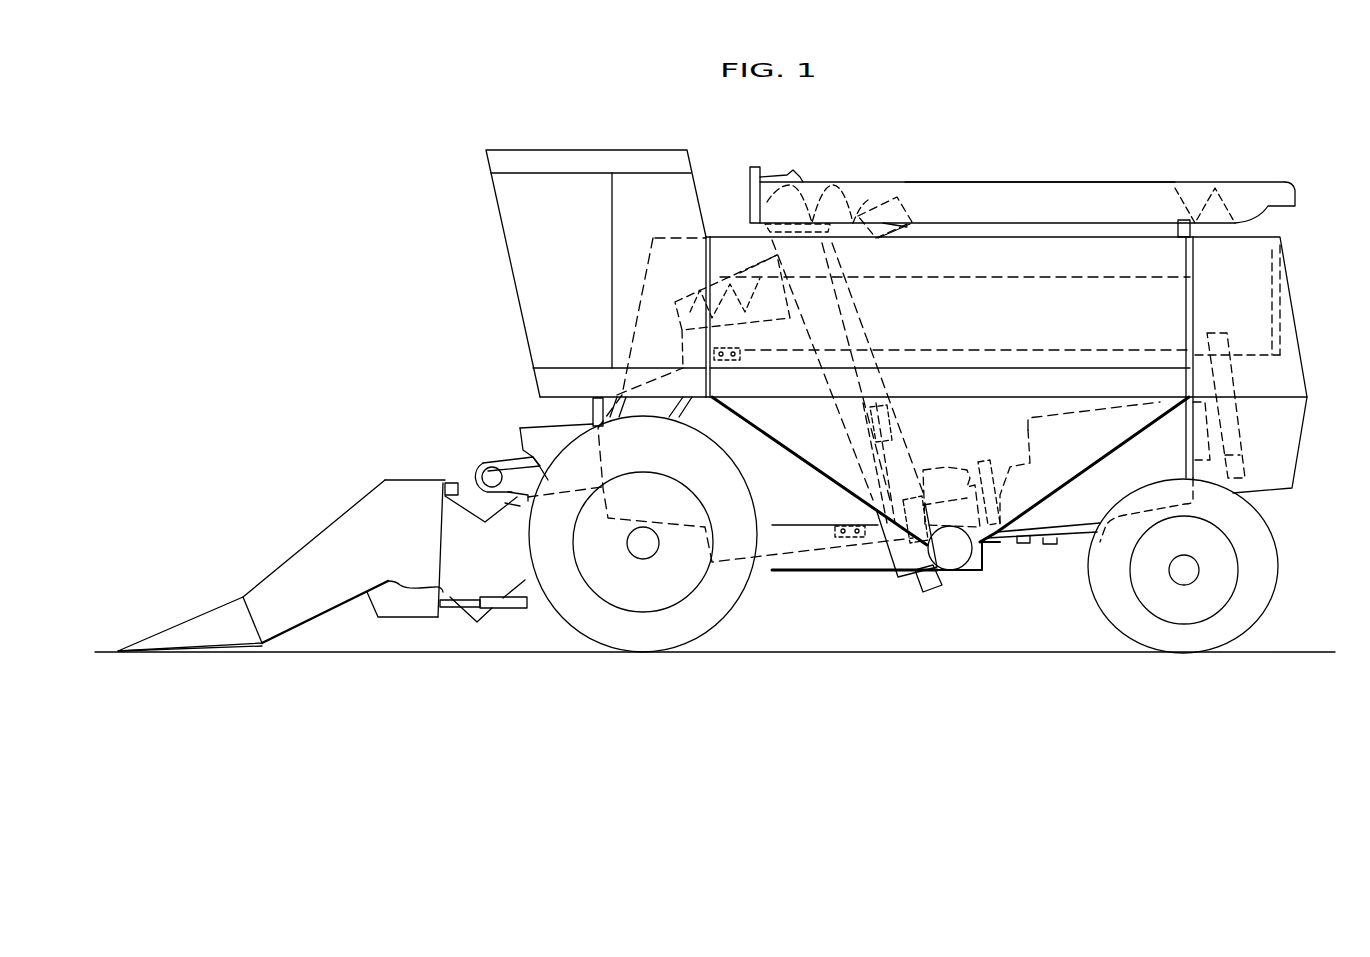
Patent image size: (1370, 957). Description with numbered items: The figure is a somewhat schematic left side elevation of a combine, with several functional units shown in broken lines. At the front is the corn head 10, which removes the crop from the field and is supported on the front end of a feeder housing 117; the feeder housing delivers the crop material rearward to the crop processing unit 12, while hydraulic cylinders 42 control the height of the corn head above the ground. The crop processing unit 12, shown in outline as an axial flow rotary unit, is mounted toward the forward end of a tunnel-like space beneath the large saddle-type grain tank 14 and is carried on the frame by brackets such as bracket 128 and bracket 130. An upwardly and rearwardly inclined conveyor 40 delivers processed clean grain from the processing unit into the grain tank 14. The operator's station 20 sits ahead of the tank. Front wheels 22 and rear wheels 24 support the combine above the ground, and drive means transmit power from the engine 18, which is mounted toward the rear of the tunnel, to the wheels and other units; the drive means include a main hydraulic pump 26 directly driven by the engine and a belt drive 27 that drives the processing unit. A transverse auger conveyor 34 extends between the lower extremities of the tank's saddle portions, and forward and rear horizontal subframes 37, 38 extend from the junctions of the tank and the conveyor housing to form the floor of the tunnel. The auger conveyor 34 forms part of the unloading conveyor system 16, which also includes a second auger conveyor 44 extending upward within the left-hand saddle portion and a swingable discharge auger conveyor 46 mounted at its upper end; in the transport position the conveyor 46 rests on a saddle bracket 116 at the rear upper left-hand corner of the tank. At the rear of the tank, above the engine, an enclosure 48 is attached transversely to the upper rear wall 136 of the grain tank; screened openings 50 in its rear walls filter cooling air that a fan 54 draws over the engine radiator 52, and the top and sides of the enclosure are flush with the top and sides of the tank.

The corn head 10 is at (326, 538).
The crop processing unit 12 is at (593, 405).
The grain tank 14 is at (1016, 237).
The unloading conveyor system 16 is at (883, 182).
The engine 18 is at (1022, 430).
The operator's station 20 is at (505, 255).
The front wheels 22 is at (750, 605).
The rear wheels 24 is at (1268, 603).
The main hydraulic pump 26 is at (933, 472).
The belt drive 27 is at (897, 446).
The transverse auger conveyor 34 is at (967, 557).
The forward horizontal subframe 37 is at (846, 571).
The rear horizontal subframe 38 is at (1000, 542).
The inclined conveyor 40 is at (880, 236).
The hydraulic cylinders 42 is at (507, 610).
The second auger conveyor 44 is at (876, 328).
The swingable discharge auger conveyor 46 is at (1116, 183).
The enclosure 48 is at (1295, 302).
The screened openings 50 is at (1286, 330).
The engine radiator 52 is at (1238, 408).
The fan 54 is at (1236, 455).
The saddle bracket 116 is at (1178, 232).
The feeder housing 117 is at (470, 492).
The bracket 128 is at (837, 532).
The bracket 130 is at (738, 362).
The upper rear wall 136 is at (1194, 297).